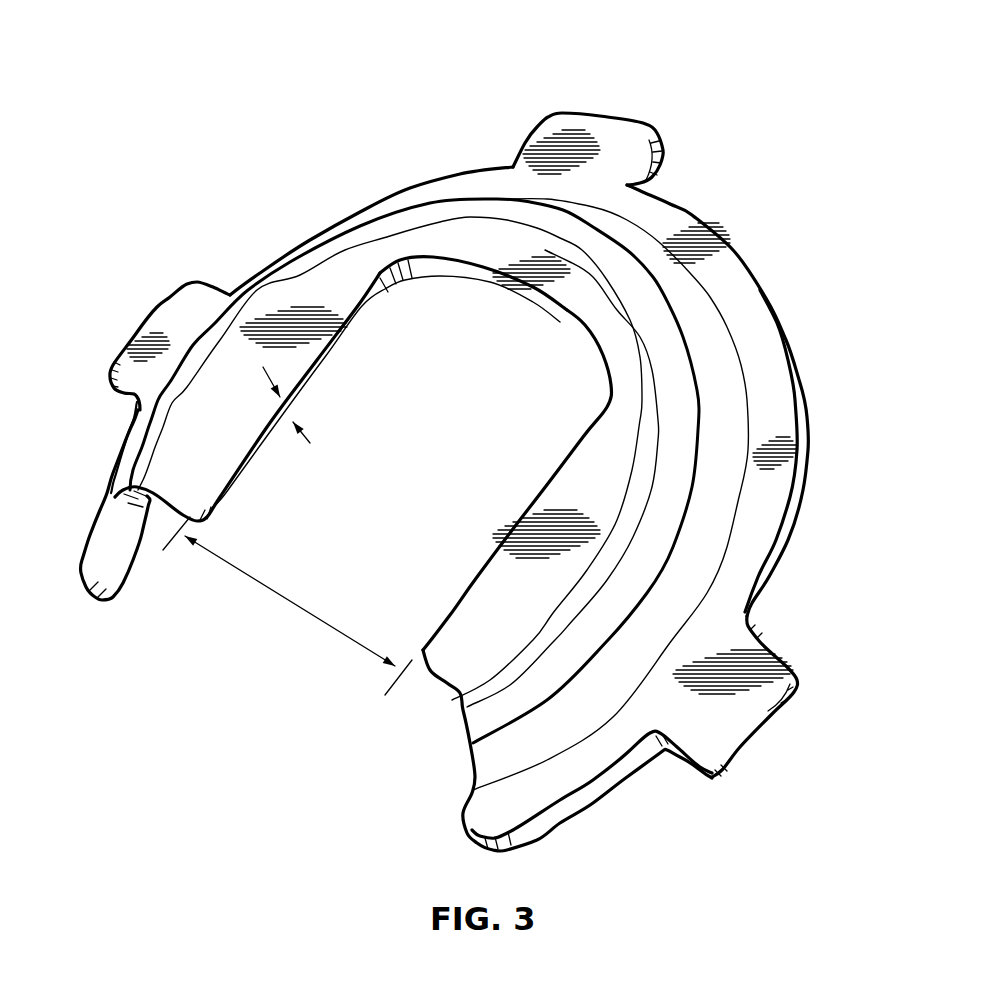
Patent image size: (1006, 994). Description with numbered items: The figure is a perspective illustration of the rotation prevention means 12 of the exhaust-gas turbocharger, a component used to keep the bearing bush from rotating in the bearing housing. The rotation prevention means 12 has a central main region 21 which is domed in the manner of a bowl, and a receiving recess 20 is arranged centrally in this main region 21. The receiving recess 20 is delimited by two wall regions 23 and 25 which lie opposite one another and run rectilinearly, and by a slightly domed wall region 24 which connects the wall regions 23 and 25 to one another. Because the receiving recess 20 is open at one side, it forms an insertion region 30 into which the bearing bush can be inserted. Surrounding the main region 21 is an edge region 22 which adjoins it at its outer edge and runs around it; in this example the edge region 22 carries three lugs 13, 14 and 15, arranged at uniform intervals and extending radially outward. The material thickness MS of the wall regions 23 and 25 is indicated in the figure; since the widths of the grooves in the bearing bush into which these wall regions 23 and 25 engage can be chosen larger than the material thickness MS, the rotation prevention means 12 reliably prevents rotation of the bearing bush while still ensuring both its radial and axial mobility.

The rotation prevention means 12 is at (902, 200).
The lug 13 is at (158, 327).
The lug 14 is at (599, 137).
The lug 15 is at (748, 707).
The receiving recess 20 is at (455, 481).
The central main region 21 is at (653, 424).
The edge region 22 is at (763, 352).
The wall region 23 is at (327, 358).
The slightly domed wall region 24 is at (543, 303).
The wall region 25 is at (477, 578).
The insertion region 30 is at (282, 598).
The material thickness MS is at (278, 407).